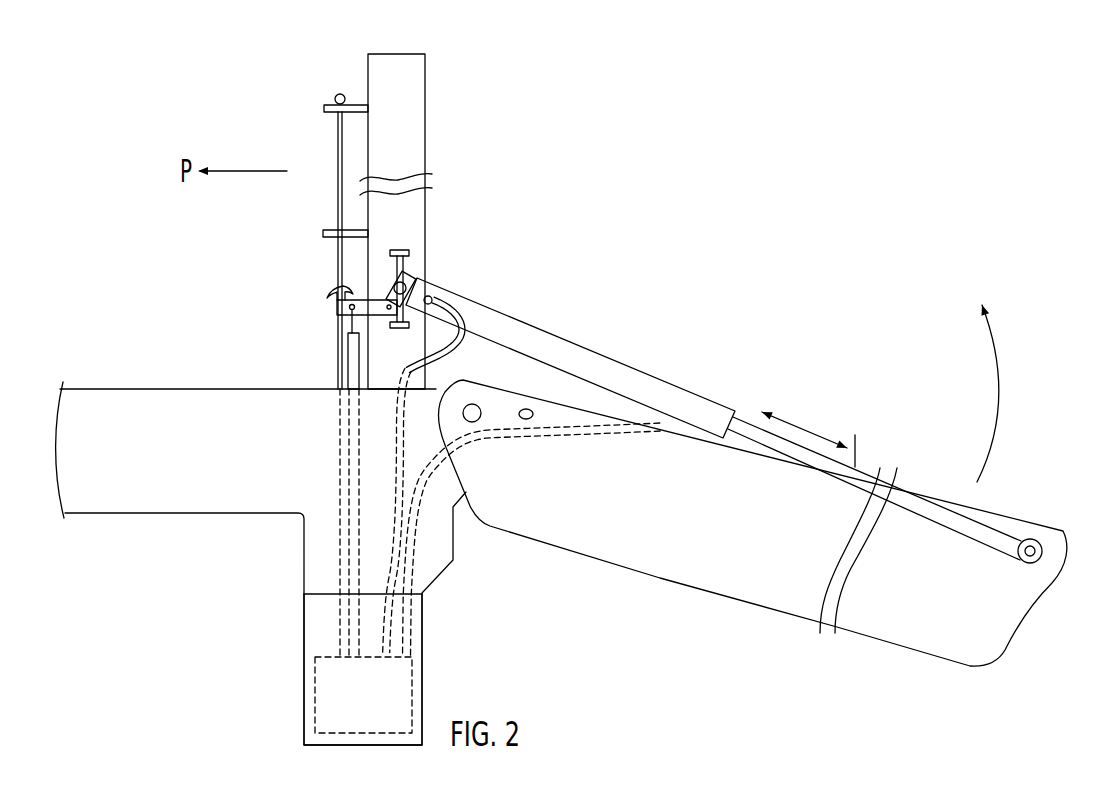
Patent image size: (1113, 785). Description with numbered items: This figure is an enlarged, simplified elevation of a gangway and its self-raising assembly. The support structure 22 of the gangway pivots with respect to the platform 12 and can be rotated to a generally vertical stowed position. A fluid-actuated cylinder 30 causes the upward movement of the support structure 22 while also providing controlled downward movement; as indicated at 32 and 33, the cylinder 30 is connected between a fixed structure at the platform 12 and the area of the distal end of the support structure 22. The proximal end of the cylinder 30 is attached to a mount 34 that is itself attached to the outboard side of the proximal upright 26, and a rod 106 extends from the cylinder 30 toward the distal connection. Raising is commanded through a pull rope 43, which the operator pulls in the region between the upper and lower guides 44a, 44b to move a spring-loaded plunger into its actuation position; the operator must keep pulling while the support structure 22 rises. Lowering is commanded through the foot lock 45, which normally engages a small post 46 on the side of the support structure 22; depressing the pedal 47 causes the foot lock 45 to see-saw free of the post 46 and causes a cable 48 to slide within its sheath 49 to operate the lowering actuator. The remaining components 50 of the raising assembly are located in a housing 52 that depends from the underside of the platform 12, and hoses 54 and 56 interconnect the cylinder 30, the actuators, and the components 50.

The platform 12 is at (130, 493).
The support structure 22 is at (937, 640).
The proximal upright 26 is at (420, 110).
The fluid-actuated cylinder 30 is at (512, 318).
The cylinder connection point 32 is at (395, 283).
The cylinder connection point 33 is at (1037, 540).
The mount 34 is at (408, 250).
The pull rope 43 is at (338, 132).
The upper guide 44a is at (352, 100).
The lower guide 44b is at (330, 232).
The foot lock 45 is at (337, 310).
The post 46 is at (528, 420).
The pedal 47 is at (336, 290).
The cable 48 is at (340, 323).
The sheath 49 is at (350, 375).
The components 50 is at (315, 693).
The housing 52 is at (422, 683).
The hose 54 is at (598, 448).
The hose 56 is at (447, 348).
The rod 106 is at (912, 490).